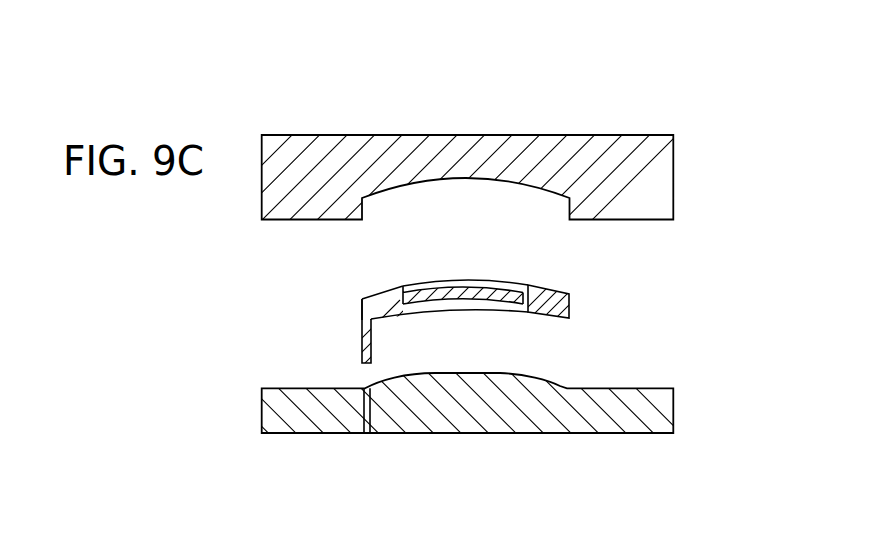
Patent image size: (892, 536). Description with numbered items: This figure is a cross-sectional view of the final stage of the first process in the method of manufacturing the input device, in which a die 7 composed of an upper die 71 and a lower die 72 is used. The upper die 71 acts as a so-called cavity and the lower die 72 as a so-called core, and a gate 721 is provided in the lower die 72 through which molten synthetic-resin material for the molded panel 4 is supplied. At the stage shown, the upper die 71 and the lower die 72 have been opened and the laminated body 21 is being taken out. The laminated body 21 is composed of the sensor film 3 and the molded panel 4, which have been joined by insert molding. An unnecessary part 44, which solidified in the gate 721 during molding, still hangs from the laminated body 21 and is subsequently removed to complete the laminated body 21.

The die 7 is at (767, 138).
The upper die 71 is at (673, 172).
The lower die 72 is at (673, 407).
The gate 721 is at (365, 417).
The laminated body 21 is at (455, 315).
The unnecessary part 44 is at (362, 352).
The sensor film 3 is at (485, 280).
The molded panel 4 is at (569, 299).